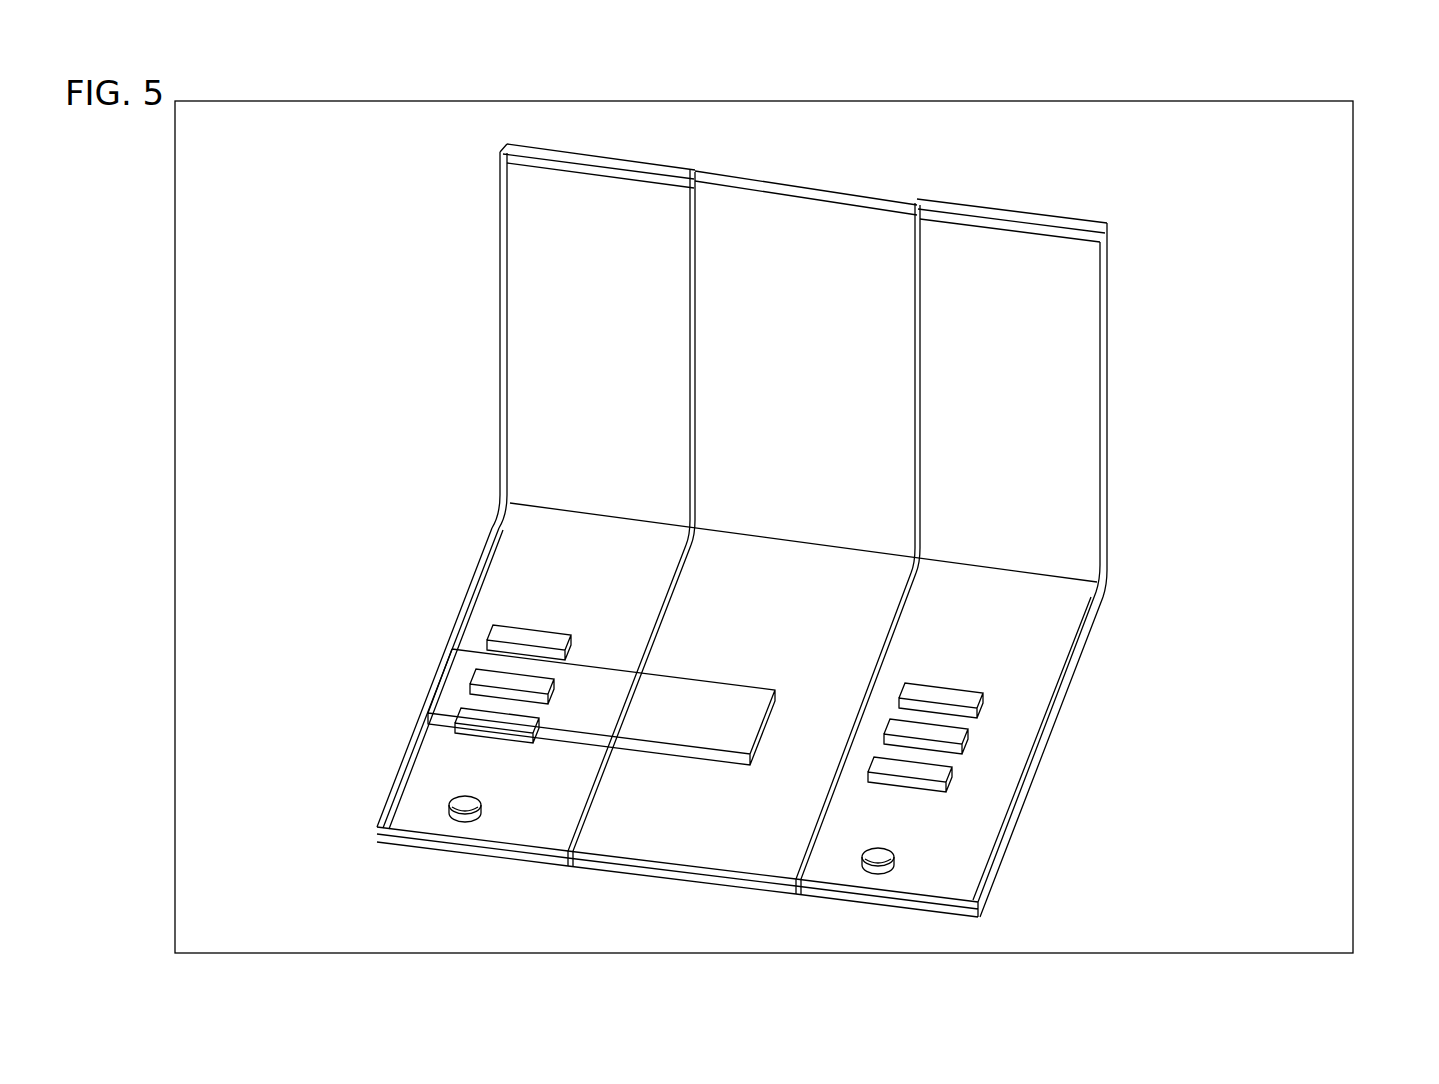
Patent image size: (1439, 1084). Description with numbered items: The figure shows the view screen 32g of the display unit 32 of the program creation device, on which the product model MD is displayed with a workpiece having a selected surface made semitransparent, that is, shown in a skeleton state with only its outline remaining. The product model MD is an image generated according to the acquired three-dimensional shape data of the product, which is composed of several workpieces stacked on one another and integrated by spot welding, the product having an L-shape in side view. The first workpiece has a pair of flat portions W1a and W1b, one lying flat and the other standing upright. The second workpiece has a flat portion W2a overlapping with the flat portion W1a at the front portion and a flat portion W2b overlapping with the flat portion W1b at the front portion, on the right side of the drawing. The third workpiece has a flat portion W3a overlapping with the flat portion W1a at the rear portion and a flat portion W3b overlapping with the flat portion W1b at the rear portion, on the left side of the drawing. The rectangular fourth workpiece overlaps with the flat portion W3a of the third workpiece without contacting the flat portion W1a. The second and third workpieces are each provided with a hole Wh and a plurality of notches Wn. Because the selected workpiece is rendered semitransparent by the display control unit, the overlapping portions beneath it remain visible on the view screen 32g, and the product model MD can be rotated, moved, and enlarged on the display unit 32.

The display unit 32 is at (1358, 214).
The view screen 32g is at (1270, 293).
The flat portion W3b is at (678, 165).
The flat portion W3a is at (376, 840).
The flat portion W1a is at (963, 828).
The flat portion W1b is at (1040, 400).
The flat portion W2a is at (990, 890).
The flat portion W2b is at (1108, 387).
The notches Wn is at (489, 629).
The hole Wh is at (479, 814).
The product model MD is at (420, 453).